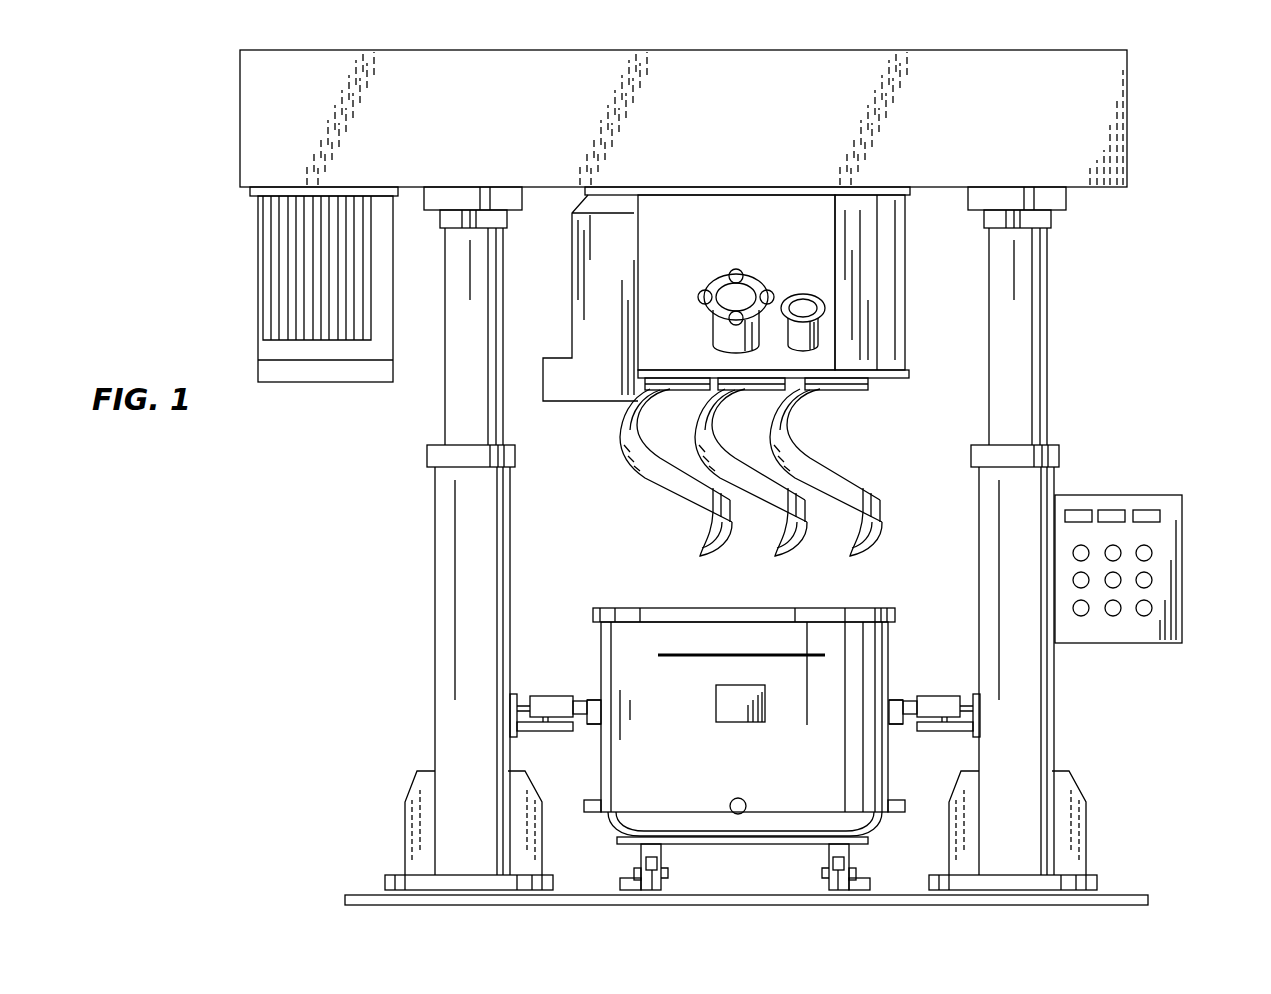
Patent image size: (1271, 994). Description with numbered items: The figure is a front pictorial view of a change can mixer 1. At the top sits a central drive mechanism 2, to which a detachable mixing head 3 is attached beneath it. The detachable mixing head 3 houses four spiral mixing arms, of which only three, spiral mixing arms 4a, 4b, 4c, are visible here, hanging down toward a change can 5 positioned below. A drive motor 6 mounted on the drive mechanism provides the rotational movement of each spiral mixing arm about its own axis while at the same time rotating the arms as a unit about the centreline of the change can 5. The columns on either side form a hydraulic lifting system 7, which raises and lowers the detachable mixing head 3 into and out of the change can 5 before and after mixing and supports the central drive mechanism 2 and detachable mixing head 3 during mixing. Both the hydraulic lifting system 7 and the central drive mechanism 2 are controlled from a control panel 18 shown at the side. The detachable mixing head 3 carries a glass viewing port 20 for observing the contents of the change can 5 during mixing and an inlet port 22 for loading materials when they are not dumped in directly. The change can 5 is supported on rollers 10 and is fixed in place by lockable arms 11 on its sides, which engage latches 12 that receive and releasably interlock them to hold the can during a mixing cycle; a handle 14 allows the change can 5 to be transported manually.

The change can mixer 1 is at (1137, 126).
The central drive mechanism 2 is at (252, 110).
The detachable mixing head 3 is at (858, 215).
The spiral mixing arm 4a is at (623, 447).
The spiral mixing arm 4b is at (745, 440).
The spiral mixing arm 4c is at (793, 438).
The change can 5 is at (601, 660).
The drive motor 6 is at (312, 383).
The hydraulic lifting system 7 is at (453, 604).
The rollers 10 is at (834, 864).
The lockable arms 11 is at (598, 732).
The latches 12 is at (553, 702).
The handle 14 is at (712, 652).
The control panel 18 is at (1160, 645).
The glass viewing port 20 is at (718, 275).
The inlet port 22 is at (801, 293).